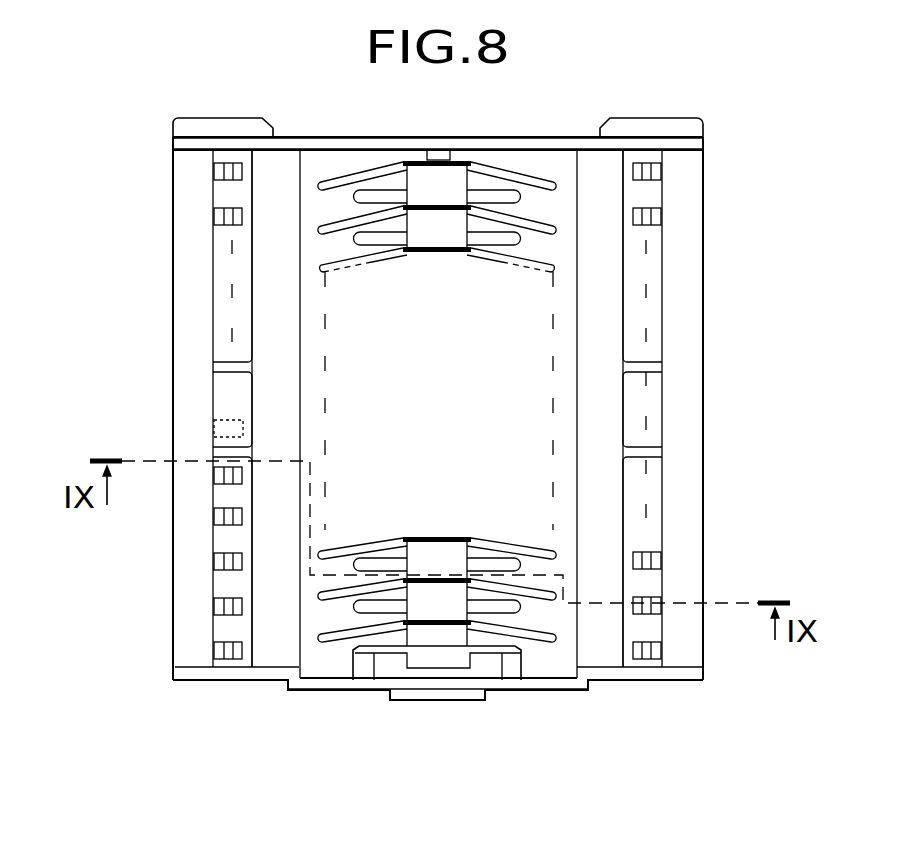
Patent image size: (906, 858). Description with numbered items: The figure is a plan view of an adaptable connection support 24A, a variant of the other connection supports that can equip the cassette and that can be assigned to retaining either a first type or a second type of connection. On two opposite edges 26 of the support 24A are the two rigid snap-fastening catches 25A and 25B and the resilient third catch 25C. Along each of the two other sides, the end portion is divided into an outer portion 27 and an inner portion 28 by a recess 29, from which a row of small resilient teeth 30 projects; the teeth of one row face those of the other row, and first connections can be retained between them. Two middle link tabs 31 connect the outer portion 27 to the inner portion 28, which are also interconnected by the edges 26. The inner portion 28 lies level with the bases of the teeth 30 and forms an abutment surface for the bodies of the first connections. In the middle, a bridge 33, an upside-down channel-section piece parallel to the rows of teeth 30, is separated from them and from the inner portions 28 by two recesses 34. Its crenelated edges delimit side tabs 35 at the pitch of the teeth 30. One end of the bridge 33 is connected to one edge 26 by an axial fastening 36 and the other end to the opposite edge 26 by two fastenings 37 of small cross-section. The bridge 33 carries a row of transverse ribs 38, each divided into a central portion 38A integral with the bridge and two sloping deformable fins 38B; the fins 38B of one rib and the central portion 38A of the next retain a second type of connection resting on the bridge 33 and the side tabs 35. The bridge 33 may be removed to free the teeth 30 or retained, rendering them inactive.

The adaptable support 24A is at (161, 148).
The rigid snap-fastening catch 25A is at (226, 126).
The rigid snap-fastening catch 25B is at (647, 128).
The resilient third catch 25C is at (452, 697).
The opposite edge 26 is at (348, 143).
The outer portion 27 is at (200, 302).
The inner portion 28 is at (275, 402).
The recess 29 is at (230, 584).
The resilient teeth 30 is at (237, 225).
The middle link tab 31 is at (226, 367).
The middle bridge 33 is at (452, 562).
The recess 34 is at (553, 657).
The side tab 35 is at (517, 607).
The axial fastening 36 is at (450, 155).
The fastening 37 is at (361, 668).
The transverse rib 38 is at (519, 540).
The central portion 38A is at (442, 535).
The deformable fin 38B is at (366, 540).